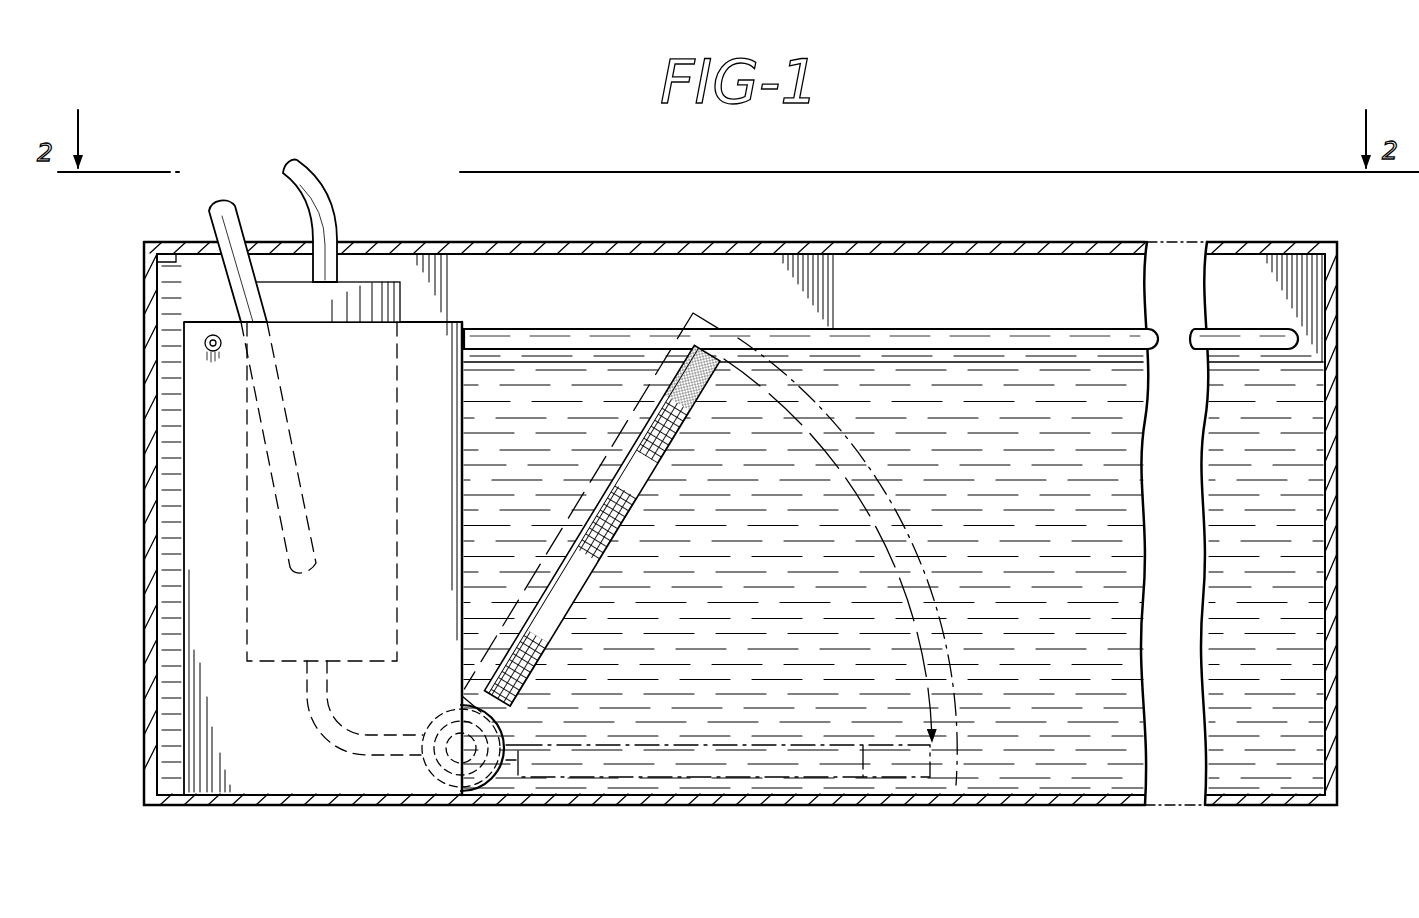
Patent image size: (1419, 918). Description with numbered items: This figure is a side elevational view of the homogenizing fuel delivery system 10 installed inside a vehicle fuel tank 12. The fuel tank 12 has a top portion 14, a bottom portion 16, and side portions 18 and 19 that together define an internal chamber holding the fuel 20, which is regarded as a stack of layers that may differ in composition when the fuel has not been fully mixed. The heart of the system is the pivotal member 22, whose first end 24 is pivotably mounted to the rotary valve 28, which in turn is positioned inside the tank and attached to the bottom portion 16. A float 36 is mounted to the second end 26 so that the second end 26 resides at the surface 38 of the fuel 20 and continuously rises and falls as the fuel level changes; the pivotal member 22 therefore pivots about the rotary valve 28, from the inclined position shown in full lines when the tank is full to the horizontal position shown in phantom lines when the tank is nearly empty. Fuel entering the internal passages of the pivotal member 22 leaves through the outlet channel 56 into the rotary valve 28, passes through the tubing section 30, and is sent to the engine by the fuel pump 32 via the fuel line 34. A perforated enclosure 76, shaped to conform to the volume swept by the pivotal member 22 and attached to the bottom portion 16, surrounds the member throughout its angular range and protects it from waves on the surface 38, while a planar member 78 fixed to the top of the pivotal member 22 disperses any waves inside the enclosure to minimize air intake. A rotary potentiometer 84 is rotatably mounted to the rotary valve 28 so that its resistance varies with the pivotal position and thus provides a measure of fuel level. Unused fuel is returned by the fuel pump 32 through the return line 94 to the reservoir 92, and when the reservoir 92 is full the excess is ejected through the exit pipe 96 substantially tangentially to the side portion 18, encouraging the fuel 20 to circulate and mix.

The homogenizing fuel delivery system 10 is at (638, 280).
The fuel tank 12 is at (842, 235).
The top portion 14 is at (1100, 241).
The bottom portion 16 is at (1012, 806).
The side portion 18 is at (145, 523).
The side portion 19 is at (1338, 427).
The fuel 20 is at (1295, 582).
The pivotal member 22 is at (533, 600).
The first end 24 is at (513, 708).
The second end 26 is at (667, 402).
The rotary valve 28 is at (490, 779).
The tubing section 30 is at (333, 737).
The fuel pump 32 is at (366, 292).
The fuel line 34 is at (313, 185).
The float 36 is at (722, 358).
The surface 38 is at (1023, 362).
The outlet channel 56 is at (480, 709).
The perforated enclosure 76 is at (817, 405).
The planar member 78 is at (613, 474).
The rotary potentiometer 84 is at (438, 774).
The reservoir 92 is at (222, 718).
The return line 94 is at (233, 207).
The exit pipe 96 is at (204, 343).